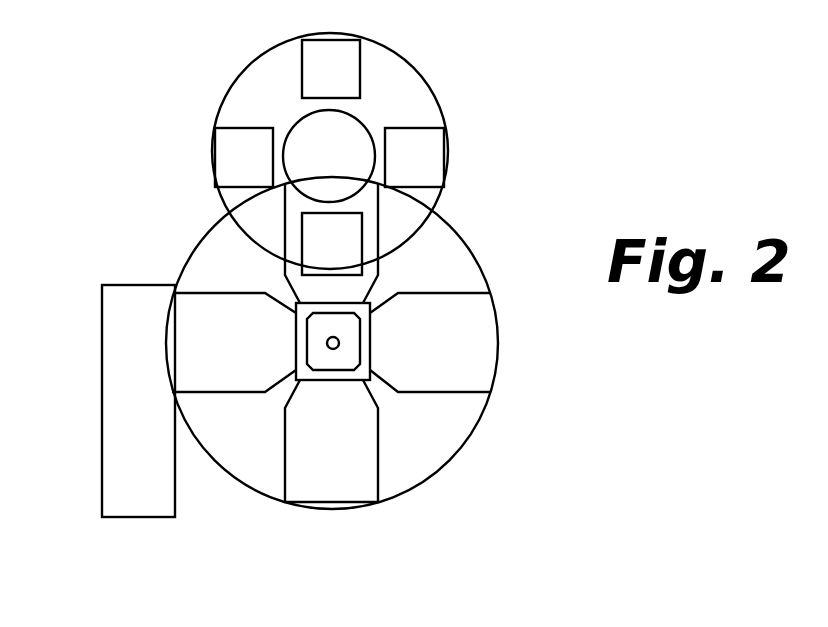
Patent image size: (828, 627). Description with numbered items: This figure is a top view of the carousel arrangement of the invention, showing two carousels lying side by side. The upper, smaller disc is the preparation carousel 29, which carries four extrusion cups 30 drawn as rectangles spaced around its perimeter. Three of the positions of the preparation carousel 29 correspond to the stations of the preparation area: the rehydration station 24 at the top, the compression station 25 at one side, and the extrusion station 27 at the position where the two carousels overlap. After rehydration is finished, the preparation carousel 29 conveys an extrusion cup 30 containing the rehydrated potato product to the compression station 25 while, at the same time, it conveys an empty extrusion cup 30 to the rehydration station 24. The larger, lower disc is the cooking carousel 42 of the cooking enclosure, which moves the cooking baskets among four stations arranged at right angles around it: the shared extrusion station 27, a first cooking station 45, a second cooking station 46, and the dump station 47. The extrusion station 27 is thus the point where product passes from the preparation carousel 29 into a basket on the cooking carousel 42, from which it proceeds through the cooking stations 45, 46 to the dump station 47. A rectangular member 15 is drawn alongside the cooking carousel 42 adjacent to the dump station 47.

The mounting bracket 15 is at (125, 368).
The rehydration station 24 is at (336, 65).
The compression station 25 is at (238, 152).
The extrusion station 27 is at (350, 244).
The preparation carousel 29 is at (404, 95).
The extrusion cups 30 is at (310, 77).
The cooking carousel 42 is at (440, 437).
The cooking station 45 is at (468, 332).
The cooking station 46 is at (318, 478).
The dump station 47 is at (220, 316).